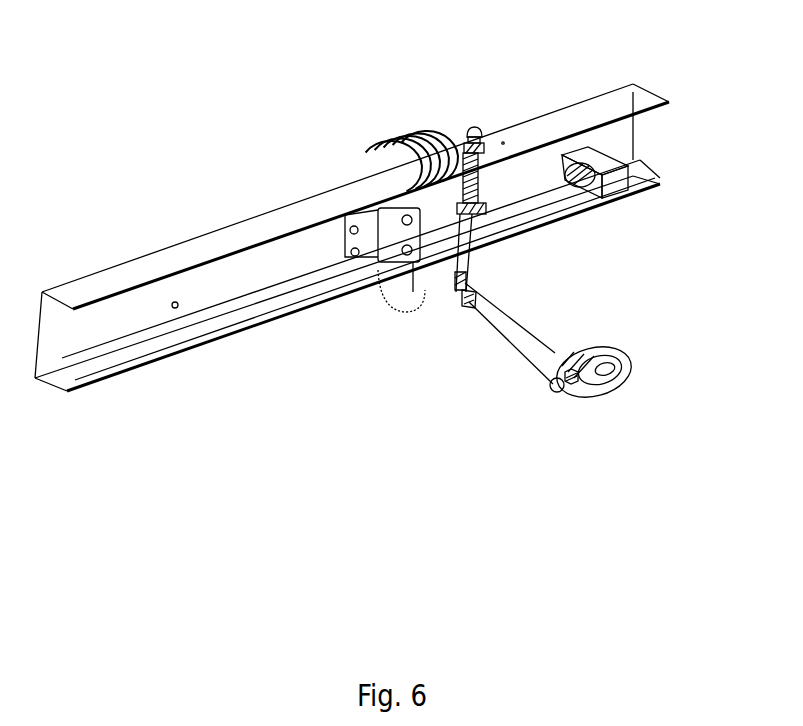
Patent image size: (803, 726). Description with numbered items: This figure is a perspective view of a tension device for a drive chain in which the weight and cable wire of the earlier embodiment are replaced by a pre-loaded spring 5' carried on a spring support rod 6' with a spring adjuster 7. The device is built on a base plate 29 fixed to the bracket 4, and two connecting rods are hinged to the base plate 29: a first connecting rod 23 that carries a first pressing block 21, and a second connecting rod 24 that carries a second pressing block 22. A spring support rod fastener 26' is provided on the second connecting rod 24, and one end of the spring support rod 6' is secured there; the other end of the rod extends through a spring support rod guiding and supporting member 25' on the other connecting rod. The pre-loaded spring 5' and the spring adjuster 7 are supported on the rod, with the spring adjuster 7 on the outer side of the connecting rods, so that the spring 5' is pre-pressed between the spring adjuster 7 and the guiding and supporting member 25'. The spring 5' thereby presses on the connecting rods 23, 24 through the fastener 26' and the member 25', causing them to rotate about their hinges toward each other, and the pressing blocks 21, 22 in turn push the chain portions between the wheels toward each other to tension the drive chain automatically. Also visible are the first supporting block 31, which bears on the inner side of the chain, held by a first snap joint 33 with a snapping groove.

The bracket 4 is at (370, 237).
The first supporting block 31 is at (398, 128).
The first snap joint 33 is at (399, 169).
The base plate 29 is at (380, 247).
The spring adjuster 7 is at (482, 147).
The pre-loaded spring 5' is at (556, 162).
The spring support rod guiding and supporting member 25' is at (545, 266).
The spring support rod 6' is at (413, 346).
The spring support rod fastener 26' is at (458, 373).
The second connecting rod 24 is at (501, 338).
The second pressing block 22 is at (623, 385).
The first pressing block 21 is at (625, 168).
The first connecting rod 23 is at (527, 193).